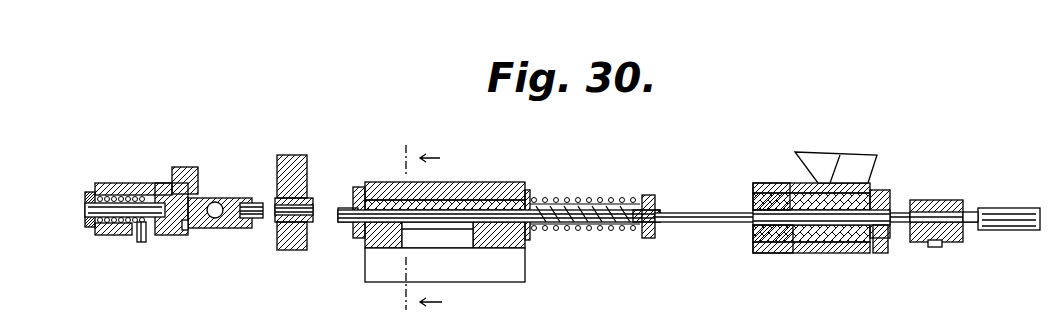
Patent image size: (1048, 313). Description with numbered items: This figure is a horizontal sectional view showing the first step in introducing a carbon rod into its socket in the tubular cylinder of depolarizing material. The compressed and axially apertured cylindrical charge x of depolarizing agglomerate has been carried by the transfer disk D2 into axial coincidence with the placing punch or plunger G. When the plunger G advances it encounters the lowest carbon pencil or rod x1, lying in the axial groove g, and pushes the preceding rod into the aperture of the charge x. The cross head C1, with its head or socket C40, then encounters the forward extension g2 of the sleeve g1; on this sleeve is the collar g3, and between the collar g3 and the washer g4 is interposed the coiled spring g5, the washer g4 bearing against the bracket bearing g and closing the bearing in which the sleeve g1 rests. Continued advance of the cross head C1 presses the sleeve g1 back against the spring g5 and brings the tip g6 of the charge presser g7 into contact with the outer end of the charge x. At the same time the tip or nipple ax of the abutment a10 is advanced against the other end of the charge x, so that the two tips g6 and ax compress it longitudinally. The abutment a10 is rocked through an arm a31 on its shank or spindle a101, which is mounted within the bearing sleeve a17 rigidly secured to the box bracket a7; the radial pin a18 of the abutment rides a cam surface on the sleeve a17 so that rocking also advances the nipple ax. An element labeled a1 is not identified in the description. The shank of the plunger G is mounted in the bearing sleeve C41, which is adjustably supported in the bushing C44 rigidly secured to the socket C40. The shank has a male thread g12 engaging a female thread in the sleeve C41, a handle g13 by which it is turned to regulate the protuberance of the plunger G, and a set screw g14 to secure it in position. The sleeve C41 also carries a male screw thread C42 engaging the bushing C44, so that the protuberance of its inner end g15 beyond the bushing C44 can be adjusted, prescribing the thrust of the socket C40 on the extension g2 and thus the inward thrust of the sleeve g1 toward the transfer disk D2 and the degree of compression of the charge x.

The bearing sleeve a17 is at (122, 170).
The shank or spindle a101 is at (152, 183).
The box bracket a7 is at (190, 167).
The tip or nipple of the abutment ax is at (262, 203).
The abutment a10 is at (220, 201).
The arm a31 is at (142, 237).
The radial pin a18 is at (185, 233).
The rod a1 is at (275, 223).
The transfer disk D2 is at (307, 153).
The cylindrical charge of depolarizing agglomerate x is at (317, 207).
The tip or nipple of the charge presser g6 is at (338, 223).
The charge presser g7 is at (367, 185).
The placing punch or plunger G is at (512, 187).
The bracket bearing g is at (485, 188).
The carbon pencil or rod x1 is at (442, 222).
The sleeve g1 is at (493, 250).
The washer g4 is at (532, 193).
The coiled spring g5 is at (580, 198).
The forward extension g2 is at (640, 195).
The collar g3 is at (656, 196).
The inner end of the bearing sleeve g15 is at (750, 227).
The head or socket of the cross head C40 is at (821, 229).
The bushing C44 is at (790, 193).
The cross head C1 is at (836, 156).
The male screw thread C42 is at (897, 203).
The bearing sleeve C41 is at (915, 203).
The set screw g14 is at (937, 247).
The male thread g12 is at (973, 212).
The handle g13 is at (997, 230).